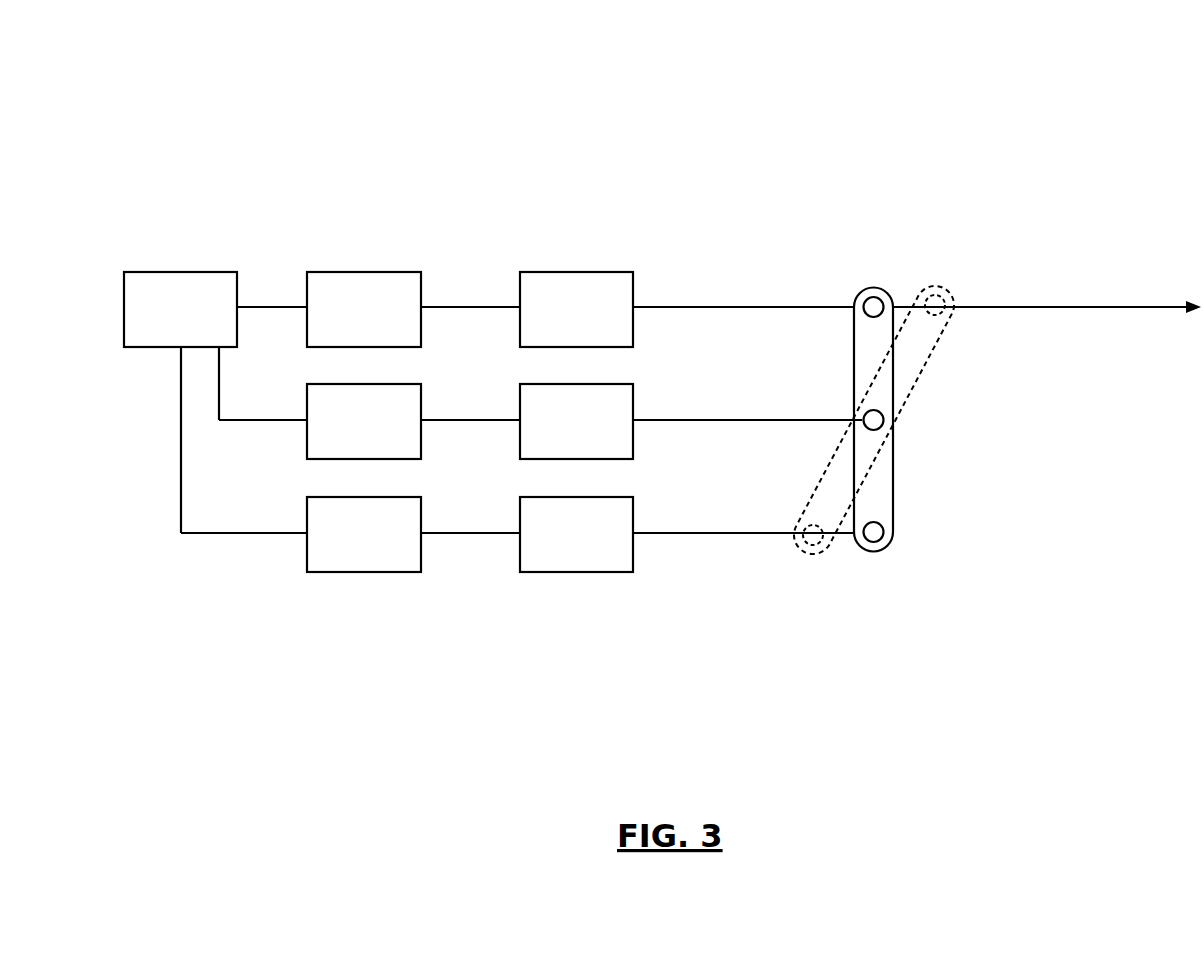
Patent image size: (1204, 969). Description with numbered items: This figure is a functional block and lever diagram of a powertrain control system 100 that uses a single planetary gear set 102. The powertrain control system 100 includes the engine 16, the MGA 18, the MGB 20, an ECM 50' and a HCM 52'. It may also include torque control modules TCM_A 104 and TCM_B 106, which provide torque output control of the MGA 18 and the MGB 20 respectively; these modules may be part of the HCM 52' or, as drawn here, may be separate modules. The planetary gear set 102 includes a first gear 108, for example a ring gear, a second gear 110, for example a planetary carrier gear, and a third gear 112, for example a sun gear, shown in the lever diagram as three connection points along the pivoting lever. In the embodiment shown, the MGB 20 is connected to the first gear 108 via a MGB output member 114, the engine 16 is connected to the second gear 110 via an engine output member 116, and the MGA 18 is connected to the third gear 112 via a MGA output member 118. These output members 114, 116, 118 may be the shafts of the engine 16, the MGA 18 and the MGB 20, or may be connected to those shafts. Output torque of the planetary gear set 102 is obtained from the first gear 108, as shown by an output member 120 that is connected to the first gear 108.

The powertrain control system 100 is at (342, 79).
The HCM 52' is at (180, 282).
The ECM 50' is at (331, 400).
The torque control module TCM_B 106 is at (363, 271).
The torque control module TCM_A 104 is at (363, 573).
The MGB 20 is at (576, 271).
The engine 16 is at (519, 397).
The MGA 18 is at (577, 573).
The MGB output member 114 is at (742, 306).
The engine output member 116 is at (742, 419).
The MGA output member 118 is at (742, 532).
The planetary gear set 102 is at (862, 295).
The first gear 108 is at (887, 295).
The second gear 110 is at (862, 416).
The third gear 112 is at (882, 523).
The output member 120 is at (1148, 305).